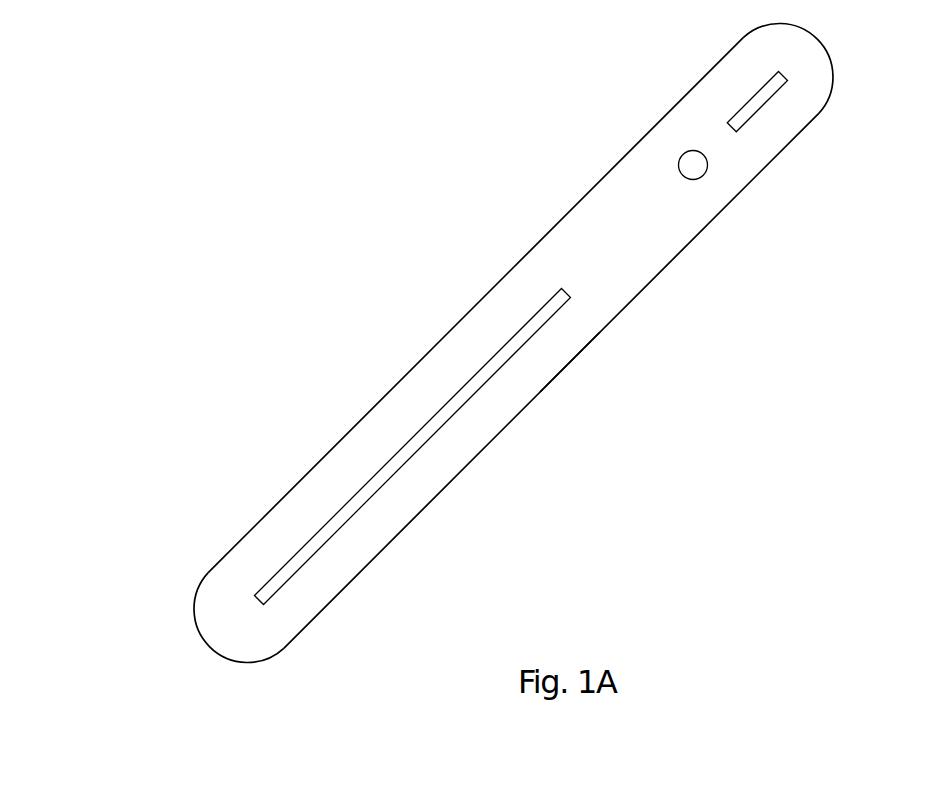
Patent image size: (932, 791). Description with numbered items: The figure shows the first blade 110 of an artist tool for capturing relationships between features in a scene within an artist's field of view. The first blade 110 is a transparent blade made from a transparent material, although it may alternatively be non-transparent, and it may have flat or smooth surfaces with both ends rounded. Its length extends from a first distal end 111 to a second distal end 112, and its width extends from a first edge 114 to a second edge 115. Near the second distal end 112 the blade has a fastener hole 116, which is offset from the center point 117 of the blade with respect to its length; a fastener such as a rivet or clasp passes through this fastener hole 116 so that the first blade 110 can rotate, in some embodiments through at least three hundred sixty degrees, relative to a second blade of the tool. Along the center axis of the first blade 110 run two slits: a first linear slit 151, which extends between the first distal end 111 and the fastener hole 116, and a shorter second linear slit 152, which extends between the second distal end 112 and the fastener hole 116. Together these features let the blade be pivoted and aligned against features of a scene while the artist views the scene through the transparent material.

The first blade 110 is at (509, 351).
The first distal end 111 is at (208, 653).
The second distal end 112 is at (822, 40).
The first edge 114 is at (427, 507).
The second edge 115 is at (378, 405).
The fastener hole 116 is at (707, 165).
The center point 117 is at (565, 392).
The first linear slit 151 is at (507, 343).
The second linear slit 152 is at (760, 88).